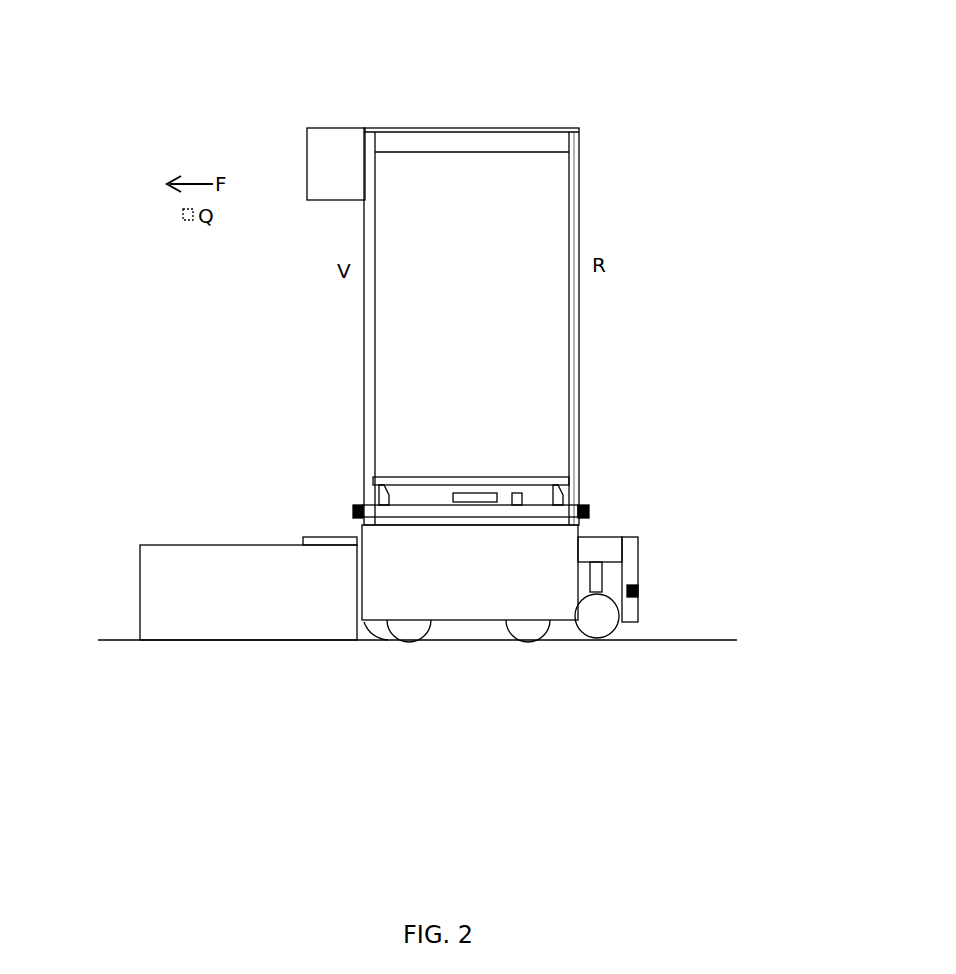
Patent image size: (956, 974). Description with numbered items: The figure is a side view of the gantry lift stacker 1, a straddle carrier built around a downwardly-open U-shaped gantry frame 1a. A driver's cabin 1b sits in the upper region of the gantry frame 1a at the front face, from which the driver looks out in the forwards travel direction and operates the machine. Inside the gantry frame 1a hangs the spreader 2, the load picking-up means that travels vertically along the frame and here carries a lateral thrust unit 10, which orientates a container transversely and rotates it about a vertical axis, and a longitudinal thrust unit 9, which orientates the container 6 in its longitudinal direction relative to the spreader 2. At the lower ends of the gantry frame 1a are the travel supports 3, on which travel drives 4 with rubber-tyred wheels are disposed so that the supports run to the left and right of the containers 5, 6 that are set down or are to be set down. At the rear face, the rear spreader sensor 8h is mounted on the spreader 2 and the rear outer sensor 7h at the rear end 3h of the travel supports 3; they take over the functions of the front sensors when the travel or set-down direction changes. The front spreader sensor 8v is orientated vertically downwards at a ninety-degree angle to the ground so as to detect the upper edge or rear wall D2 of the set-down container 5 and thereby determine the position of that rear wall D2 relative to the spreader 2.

The gantry lift stacker 1 is at (490, 137).
The gantry frame 1a is at (575, 183).
The driver's cabin 1b is at (328, 142).
The spreader 2 is at (502, 513).
The travel support 3 is at (630, 537).
The rear end of the travel supports 3h is at (627, 562).
The travel drive 4 is at (597, 613).
The container 5 is at (225, 587).
The container 6 is at (430, 563).
The rear outer sensor 7h is at (638, 567).
The front spreader sensor 8v is at (354, 505).
The rear spreader sensor 8h is at (585, 505).
The longitudinal thrust unit 9 is at (463, 493).
The lateral thrust unit 10 is at (378, 486).
The rear wall D2 is at (350, 588).